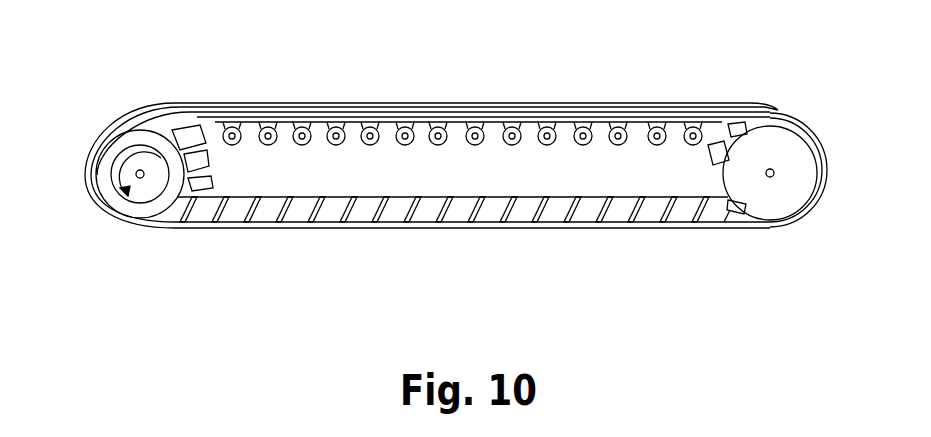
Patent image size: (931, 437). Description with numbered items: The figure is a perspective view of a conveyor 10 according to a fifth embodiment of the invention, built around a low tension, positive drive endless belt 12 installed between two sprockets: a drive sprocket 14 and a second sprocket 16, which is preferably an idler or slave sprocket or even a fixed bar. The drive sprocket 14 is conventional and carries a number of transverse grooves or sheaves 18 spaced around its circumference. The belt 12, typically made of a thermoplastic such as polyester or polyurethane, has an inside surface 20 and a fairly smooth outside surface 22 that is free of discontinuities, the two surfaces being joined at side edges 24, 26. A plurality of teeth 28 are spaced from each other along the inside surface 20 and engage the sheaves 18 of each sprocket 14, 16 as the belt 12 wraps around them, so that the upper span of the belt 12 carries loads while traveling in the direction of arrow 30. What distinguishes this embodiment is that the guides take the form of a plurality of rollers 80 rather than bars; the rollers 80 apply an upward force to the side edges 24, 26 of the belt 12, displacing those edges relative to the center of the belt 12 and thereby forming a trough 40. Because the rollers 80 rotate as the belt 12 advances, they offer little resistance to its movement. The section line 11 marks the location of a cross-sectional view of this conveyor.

The conveyor 10 is at (604, 29).
The section line 11- 11 is at (448, 97).
The endless belt 12 is at (293, 103).
The drive sprocket 14 is at (155, 199).
The idler sprocket 16 is at (782, 199).
The sheaves 18 is at (208, 179).
The inside surface 20 is at (606, 214).
The outside surface 22 is at (595, 107).
The side edge 24 is at (393, 103).
The side edge 26 is at (368, 107).
The teeth 28 is at (367, 224).
The arrow 30 is at (115, 190).
The trough 40 is at (667, 111).
The rollers 80 is at (367, 145).